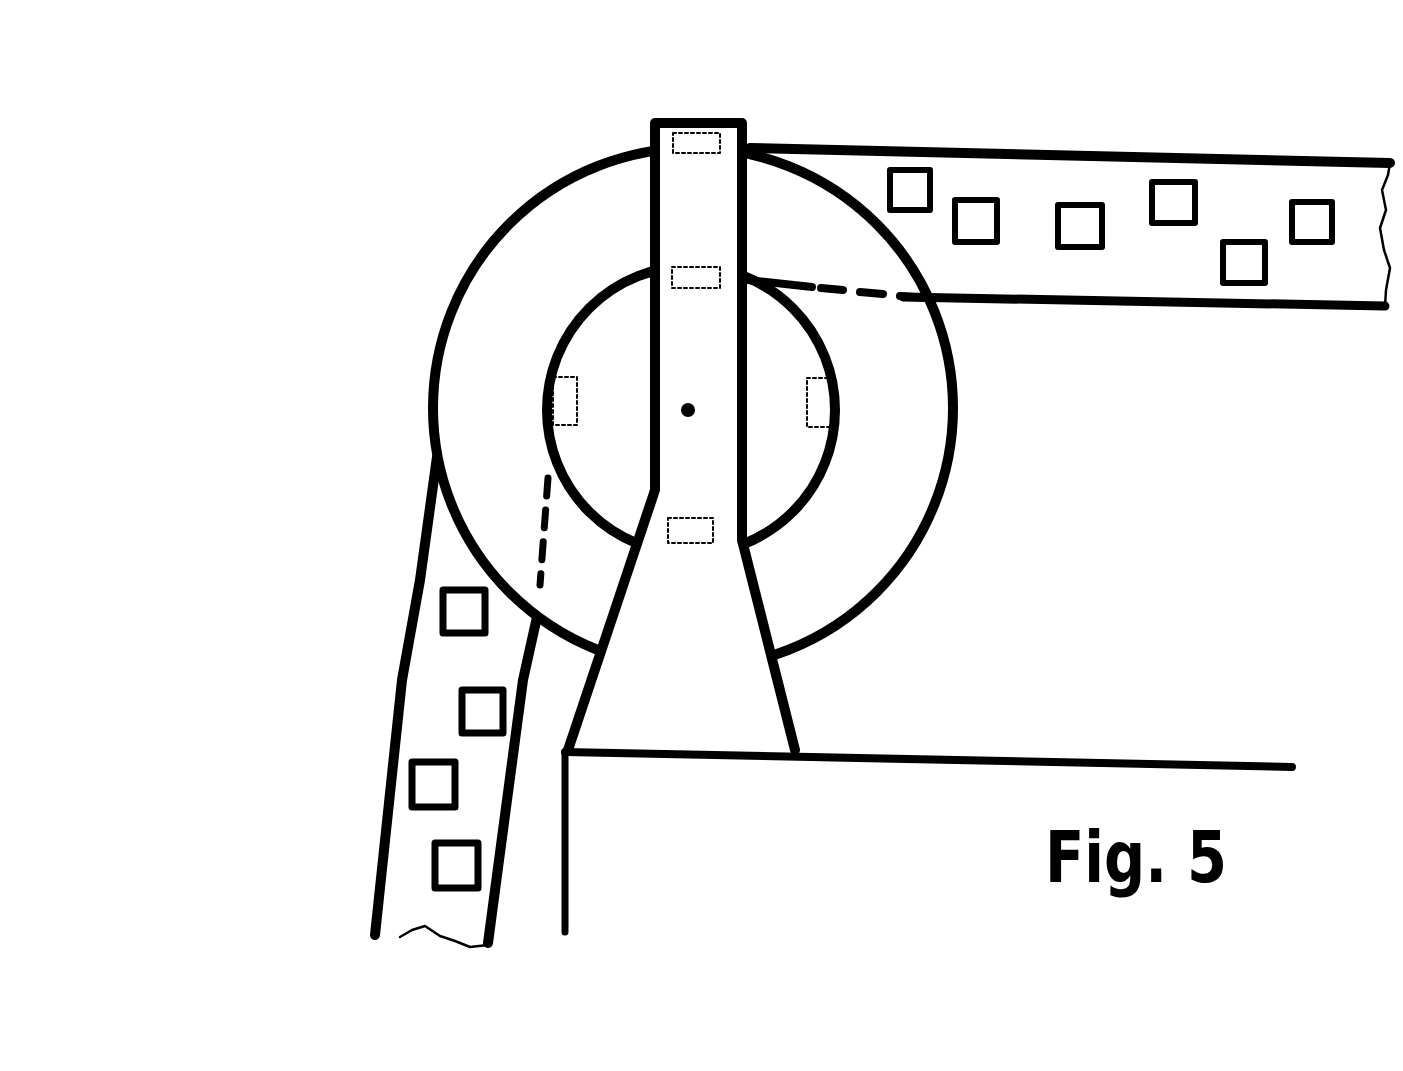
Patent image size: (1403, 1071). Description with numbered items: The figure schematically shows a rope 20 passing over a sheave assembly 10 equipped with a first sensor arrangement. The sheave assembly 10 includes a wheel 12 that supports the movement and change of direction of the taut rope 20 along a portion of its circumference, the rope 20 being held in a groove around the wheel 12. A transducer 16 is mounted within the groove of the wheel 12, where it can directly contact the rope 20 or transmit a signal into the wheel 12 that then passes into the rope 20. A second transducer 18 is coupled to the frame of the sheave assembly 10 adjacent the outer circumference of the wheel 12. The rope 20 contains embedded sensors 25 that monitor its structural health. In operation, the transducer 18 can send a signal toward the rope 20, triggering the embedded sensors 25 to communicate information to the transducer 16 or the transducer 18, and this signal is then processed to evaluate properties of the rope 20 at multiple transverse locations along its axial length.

The sheave assembly 10 is at (407, 298).
The wheel 12 is at (950, 443).
The transducer 16 is at (540, 407).
The transducer 18 is at (687, 144).
The rope 20 is at (1253, 310).
The embedded sensors 25 is at (920, 177).